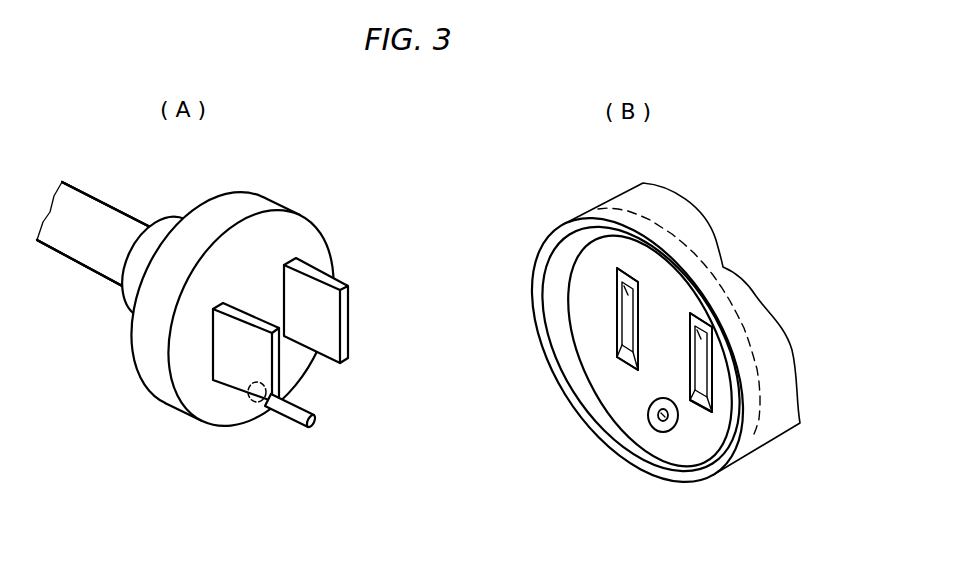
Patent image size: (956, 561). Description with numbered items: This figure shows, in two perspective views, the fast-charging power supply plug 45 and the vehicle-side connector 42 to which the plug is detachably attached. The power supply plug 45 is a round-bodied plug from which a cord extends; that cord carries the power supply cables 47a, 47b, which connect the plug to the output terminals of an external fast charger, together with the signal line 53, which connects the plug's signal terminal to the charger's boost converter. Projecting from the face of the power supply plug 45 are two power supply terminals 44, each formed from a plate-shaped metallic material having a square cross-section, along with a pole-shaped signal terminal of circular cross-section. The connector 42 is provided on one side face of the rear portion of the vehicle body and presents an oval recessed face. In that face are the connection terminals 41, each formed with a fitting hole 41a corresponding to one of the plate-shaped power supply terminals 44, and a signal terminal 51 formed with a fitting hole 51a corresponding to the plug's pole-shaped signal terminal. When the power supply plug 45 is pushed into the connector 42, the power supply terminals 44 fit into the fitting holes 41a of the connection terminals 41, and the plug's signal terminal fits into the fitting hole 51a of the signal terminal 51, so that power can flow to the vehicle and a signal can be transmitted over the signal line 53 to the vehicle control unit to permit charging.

The second connection terminals 41 is at (617, 318).
The fitting holes 41a is at (630, 277).
The connector 42 is at (693, 477).
The power supply terminals 44 is at (345, 309).
The power supply plug 45 is at (239, 200).
The power supply cable 47a is at (86, 198).
The power supply cable 47b is at (109, 219).
The signal line 53 is at (109, 219).
The signal terminal 51 is at (673, 428).
The fitting hole 51a is at (656, 415).